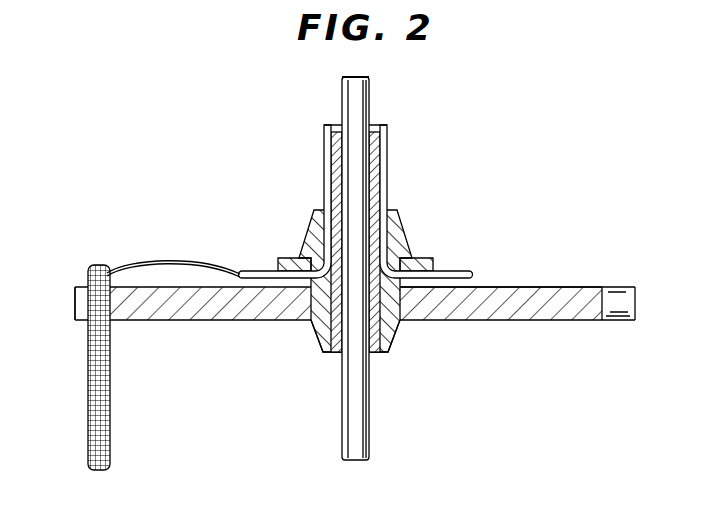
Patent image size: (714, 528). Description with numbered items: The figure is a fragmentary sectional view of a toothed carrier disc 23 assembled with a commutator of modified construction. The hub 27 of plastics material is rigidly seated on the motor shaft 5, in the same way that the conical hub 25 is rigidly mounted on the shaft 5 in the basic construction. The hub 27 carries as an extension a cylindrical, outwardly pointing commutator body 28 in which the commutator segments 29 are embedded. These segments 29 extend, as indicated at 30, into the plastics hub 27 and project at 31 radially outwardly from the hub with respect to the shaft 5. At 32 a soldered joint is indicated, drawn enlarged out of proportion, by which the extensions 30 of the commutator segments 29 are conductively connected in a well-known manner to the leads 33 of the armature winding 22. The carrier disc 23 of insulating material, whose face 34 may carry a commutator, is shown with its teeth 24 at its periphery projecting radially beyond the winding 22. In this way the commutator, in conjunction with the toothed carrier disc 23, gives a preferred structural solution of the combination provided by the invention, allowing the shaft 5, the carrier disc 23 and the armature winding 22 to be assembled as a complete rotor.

The motor shaft 5 is at (371, 418).
The armature winding 22 is at (88, 404).
The carrier disc 23 is at (203, 321).
The teeth 24 is at (75, 306).
The conical hub 25 is at (401, 335).
The hub 27 is at (406, 232).
The commutator body 28 is at (388, 140).
The commutator segments 29 is at (323, 140).
The extensions of the commutator segments 30 is at (310, 247).
The radial projections of the commutator segments 31 is at (236, 273).
The soldered joint 32 is at (258, 264).
The leads 33 is at (163, 263).
The face of the disc 34 is at (536, 288).